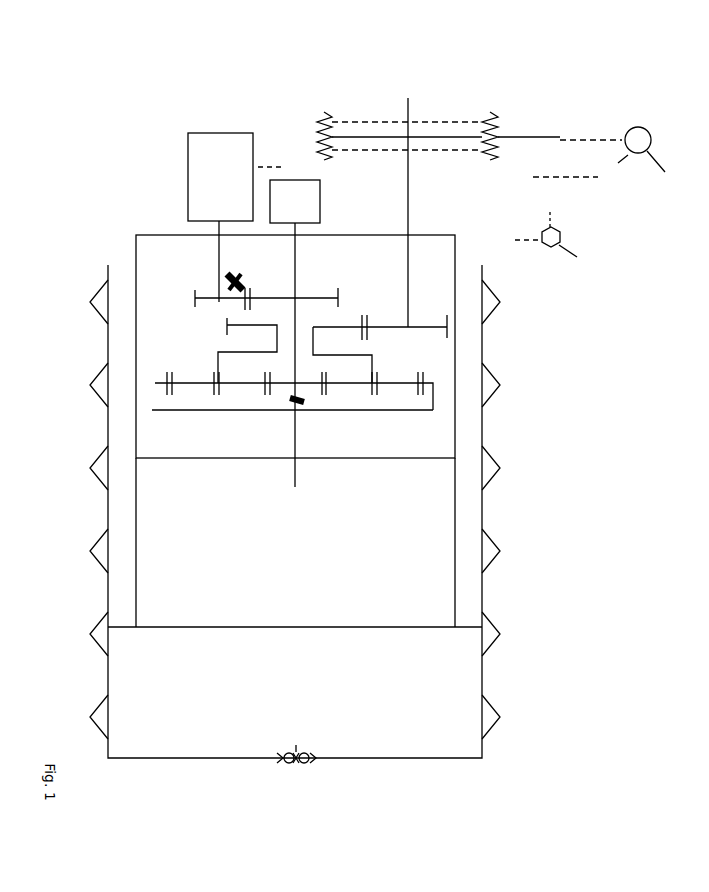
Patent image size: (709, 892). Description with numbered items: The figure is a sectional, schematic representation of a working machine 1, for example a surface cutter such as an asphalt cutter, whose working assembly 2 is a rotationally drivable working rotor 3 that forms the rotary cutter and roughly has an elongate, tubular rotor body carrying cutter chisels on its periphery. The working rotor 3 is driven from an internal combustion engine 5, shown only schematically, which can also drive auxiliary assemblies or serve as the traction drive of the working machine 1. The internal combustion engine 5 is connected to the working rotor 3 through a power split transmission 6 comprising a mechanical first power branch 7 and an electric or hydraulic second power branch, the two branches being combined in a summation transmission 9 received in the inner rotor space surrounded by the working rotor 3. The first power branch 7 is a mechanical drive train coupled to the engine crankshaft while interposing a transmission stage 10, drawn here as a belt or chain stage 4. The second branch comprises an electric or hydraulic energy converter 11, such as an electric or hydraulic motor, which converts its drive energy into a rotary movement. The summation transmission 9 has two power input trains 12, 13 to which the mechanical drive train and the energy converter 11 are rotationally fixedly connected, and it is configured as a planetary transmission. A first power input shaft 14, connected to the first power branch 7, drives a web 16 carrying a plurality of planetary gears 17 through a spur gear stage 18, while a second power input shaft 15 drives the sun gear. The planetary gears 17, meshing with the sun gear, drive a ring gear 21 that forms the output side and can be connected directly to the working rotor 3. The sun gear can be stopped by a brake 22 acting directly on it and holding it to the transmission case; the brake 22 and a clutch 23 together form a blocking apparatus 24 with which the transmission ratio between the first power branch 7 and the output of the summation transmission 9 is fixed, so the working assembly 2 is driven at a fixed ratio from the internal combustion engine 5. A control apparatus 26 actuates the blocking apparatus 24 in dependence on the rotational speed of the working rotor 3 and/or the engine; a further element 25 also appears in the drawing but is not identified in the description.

The working machine 1 is at (577, 319).
The working assembly 2 is at (505, 518).
The working rotor 3 is at (483, 588).
The belt or chain stage 4 is at (499, 108).
The internal combustion engine 5 is at (629, 160).
The power split transmission 6 is at (552, 110).
The mechanical first power branch 7 is at (412, 96).
The summation transmission 9 is at (434, 235).
The transmission stage 10 is at (258, 147).
The electric or hydraulic energy converter 11 is at (196, 143).
The power input train 12 is at (403, 260).
The power input train 13 is at (207, 258).
The first power input shaft 14 is at (406, 272).
The second power input shaft 15 is at (220, 258).
The web 16 is at (374, 355).
The planetary gears 17 is at (398, 386).
The spur gear stage 18 is at (380, 341).
The ring gear 21 is at (152, 411).
The brake 22 is at (343, 211).
The clutch 23 is at (235, 282).
The blocking apparatus 24 is at (302, 164).
The brake 25 is at (323, 186).
The control apparatus 26 is at (556, 247).